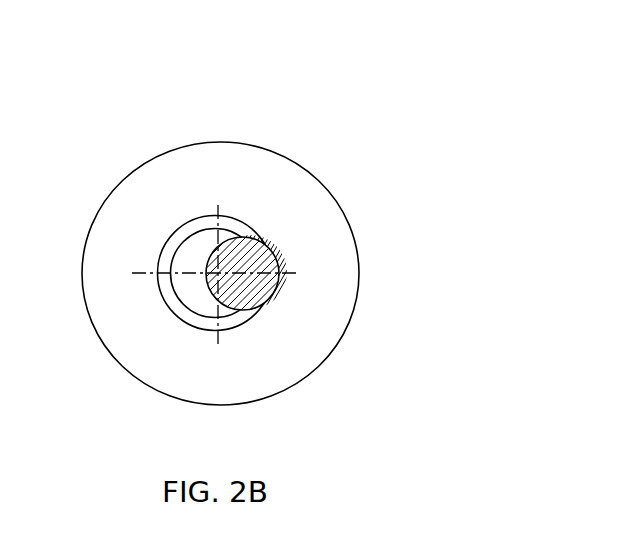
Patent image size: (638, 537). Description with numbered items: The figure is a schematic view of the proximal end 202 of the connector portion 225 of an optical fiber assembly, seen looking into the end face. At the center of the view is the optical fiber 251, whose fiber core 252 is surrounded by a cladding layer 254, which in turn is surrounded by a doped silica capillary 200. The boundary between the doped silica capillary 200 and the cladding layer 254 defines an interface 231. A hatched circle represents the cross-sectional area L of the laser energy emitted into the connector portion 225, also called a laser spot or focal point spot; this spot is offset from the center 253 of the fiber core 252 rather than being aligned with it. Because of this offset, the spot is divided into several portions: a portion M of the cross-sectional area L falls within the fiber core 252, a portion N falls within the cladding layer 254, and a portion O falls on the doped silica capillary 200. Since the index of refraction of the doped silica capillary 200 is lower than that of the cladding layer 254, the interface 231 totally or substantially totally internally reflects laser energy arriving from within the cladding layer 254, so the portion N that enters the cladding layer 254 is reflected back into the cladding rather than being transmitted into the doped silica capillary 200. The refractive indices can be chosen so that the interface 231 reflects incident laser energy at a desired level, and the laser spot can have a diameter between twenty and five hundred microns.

The doped silica capillary 200 is at (320, 208).
The proximal end 202 is at (132, 142).
The connector portion 225 is at (345, 80).
The interface 231 is at (208, 212).
The optical fiber 251 is at (245, 332).
The fiber core 252 is at (203, 242).
The center 253 is at (213, 270).
The cladding layer 254 is at (227, 218).
The cross-sectional area of laser energy L is at (290, 253).
The portion of the cross-sectional area emitted into the doped silica capillary O is at (288, 282).
The portion of the cross-sectional area emitted into the cladding layer N is at (272, 298).
The portion of the cross-sectional area emitted into the fiber core M is at (248, 297).